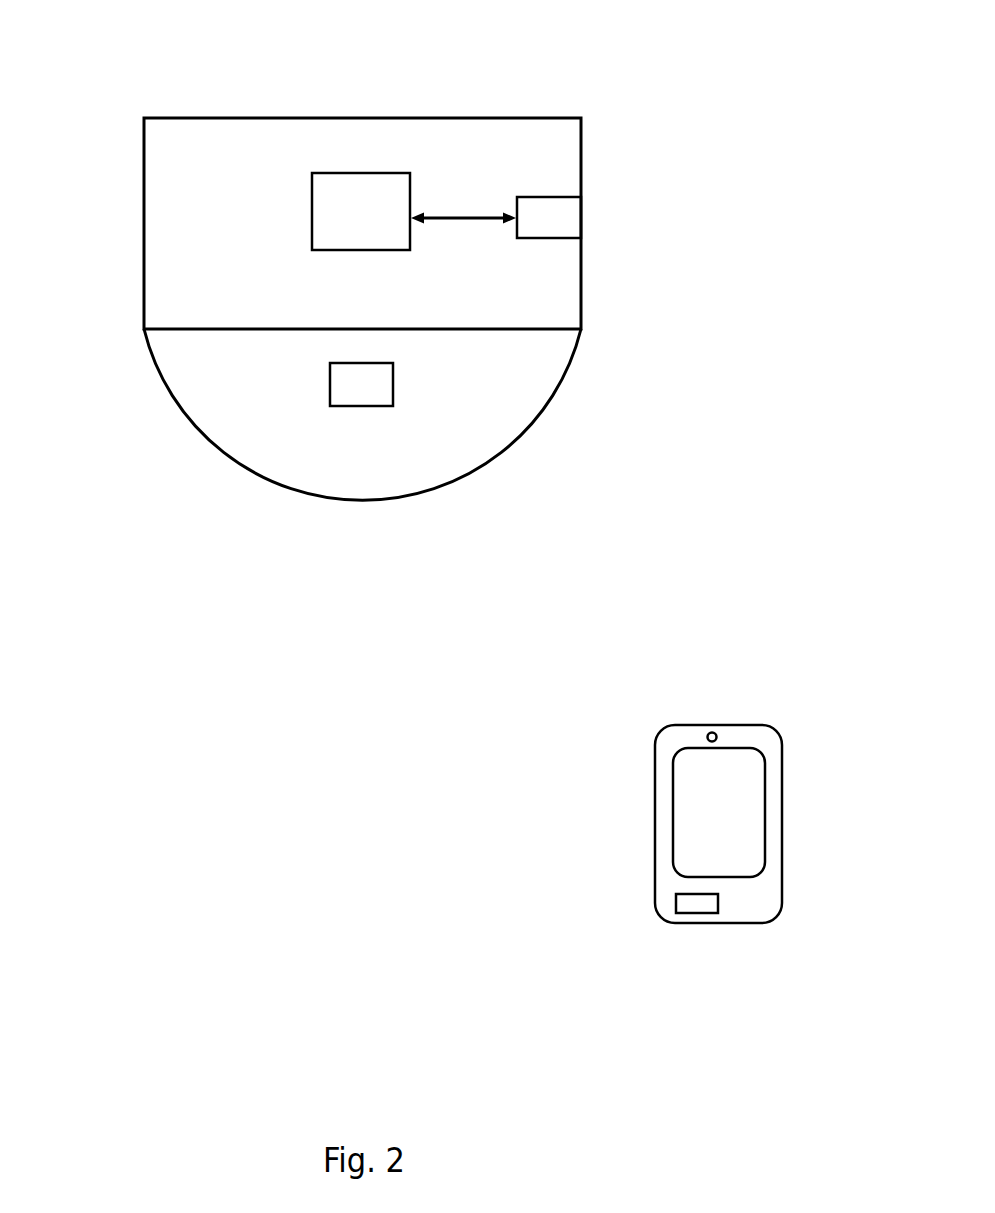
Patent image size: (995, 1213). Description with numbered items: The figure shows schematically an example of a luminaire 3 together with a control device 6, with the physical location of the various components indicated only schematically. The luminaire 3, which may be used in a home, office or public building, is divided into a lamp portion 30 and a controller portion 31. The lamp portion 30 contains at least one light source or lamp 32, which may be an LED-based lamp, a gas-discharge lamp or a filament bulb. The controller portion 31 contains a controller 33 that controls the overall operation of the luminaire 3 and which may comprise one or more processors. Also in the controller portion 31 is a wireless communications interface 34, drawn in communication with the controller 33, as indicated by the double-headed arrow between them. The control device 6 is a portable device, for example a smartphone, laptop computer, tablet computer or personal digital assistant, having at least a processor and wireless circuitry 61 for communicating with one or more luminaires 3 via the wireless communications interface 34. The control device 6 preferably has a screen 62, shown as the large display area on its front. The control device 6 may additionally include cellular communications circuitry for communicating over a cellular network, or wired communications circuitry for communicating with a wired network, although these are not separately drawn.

The luminaire 3 is at (355, 278).
The lamp portion 30 is at (559, 397).
The controller portion 31 is at (581, 259).
The lamp 32 is at (330, 382).
The controller 33 is at (357, 173).
The wireless communications interface 34 is at (552, 197).
The control device 6 is at (662, 844).
The wireless circuitry 61 is at (677, 910).
The screen 62 is at (690, 795).